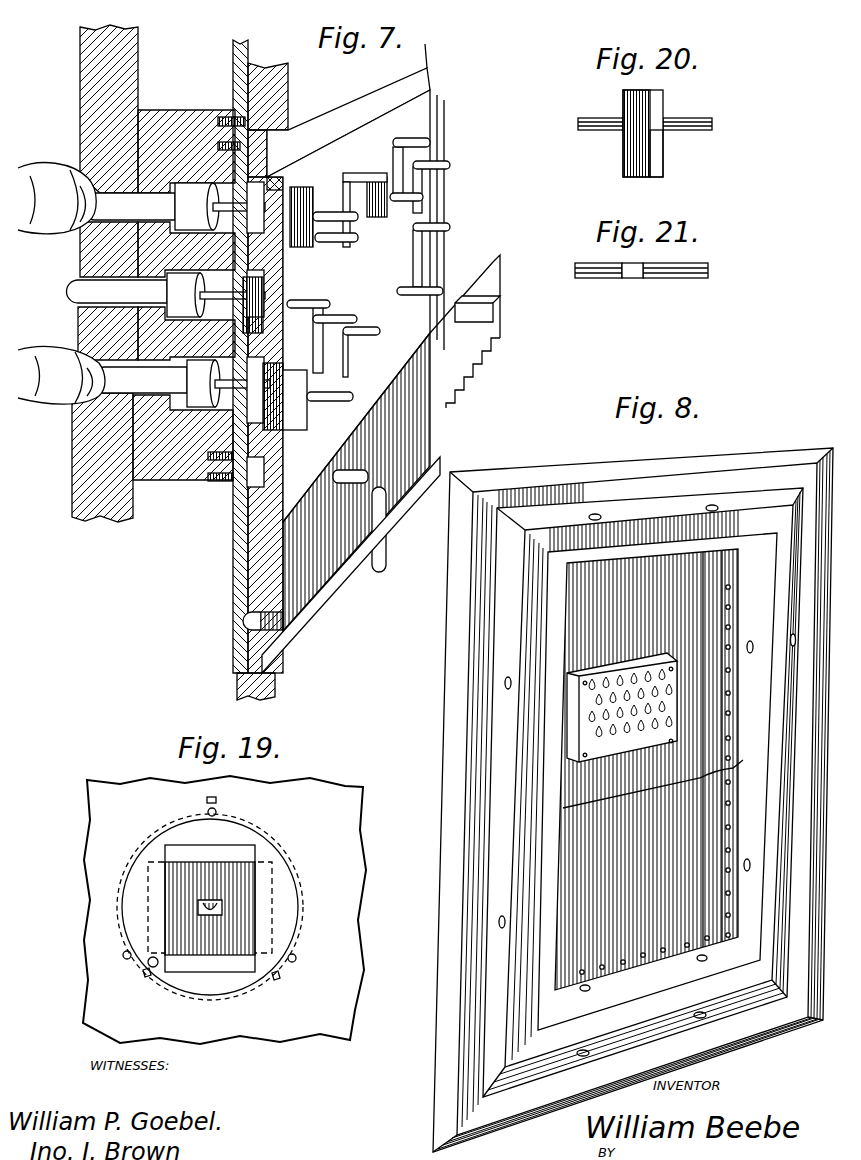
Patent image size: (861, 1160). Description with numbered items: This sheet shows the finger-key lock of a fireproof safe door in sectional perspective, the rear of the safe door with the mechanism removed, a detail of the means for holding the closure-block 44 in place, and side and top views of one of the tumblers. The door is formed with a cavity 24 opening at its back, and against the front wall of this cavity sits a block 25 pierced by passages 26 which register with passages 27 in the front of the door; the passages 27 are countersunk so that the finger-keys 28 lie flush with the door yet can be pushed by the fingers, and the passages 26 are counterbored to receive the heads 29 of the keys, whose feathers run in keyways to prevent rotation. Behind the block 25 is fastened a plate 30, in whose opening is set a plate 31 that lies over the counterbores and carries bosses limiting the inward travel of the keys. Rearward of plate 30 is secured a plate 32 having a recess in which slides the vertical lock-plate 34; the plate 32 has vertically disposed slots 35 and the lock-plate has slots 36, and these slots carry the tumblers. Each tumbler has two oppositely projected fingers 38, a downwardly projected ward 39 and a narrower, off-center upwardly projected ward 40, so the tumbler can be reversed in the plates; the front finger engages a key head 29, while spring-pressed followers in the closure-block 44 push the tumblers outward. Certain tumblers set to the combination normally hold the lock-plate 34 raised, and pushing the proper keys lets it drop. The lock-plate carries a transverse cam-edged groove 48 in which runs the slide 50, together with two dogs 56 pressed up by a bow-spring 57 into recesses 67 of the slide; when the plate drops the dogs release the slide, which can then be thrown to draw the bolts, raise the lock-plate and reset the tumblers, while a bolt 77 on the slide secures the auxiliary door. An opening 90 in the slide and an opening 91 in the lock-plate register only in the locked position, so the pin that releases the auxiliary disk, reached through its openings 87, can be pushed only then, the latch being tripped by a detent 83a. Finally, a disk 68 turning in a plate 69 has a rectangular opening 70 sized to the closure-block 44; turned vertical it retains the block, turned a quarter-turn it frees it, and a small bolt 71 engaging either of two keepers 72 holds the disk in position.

In FIG. 7, the cavity 24 is at (188, 482).
In FIG. 8, the cavity 24 is at (687, 630).
In FIG. 7, the block 25 is at (140, 110).
In FIG. 8, the block 25 is at (630, 712).
In FIG. 7, the passages 26 is at (163, 190).
In FIG. 8, the passages 26 is at (593, 742).
In FIG. 7, the passages 27 is at (70, 225).
In FIG. 7, the finger-keys 28 is at (58, 302).
In FIG. 7, the heads 29 is at (218, 295).
In FIG. 7, the plate 30 is at (243, 42).
In FIG. 8, the plate 30 is at (713, 815).
In FIG. 7, the plate 31 is at (205, 483).
In FIG. 7, the plate 32 is at (276, 94).
In FIG. 7, the lock-plate 34 is at (420, 127).
In FIG. 7, the slots 35 is at (267, 173).
In FIG. 7, the slots 36 is at (318, 345).
In FIG. 7, the fingers 38 is at (432, 143).
In FIG. 20, the fingers 38 is at (594, 125).
In FIG. 21, the fingers 38 is at (598, 278).
In FIG. 7, the ward 39 is at (300, 418).
In FIG. 20, the ward 39 is at (656, 166).
In FIG. 7, the ward 40 is at (313, 190).
In FIG. 20, the ward 40 is at (623, 92).
In FIG. 21, the ward 40 is at (637, 278).
In FIG. 19, the closure-block 44 is at (240, 885).
In FIG. 7, the groove 48 is at (278, 656).
In FIG. 7, the slide 50 is at (473, 373).
In FIG. 7, the dogs 56 is at (387, 518).
In FIG. 7, the bow-spring 57 is at (500, 338).
In FIG. 7, the recesses 67 is at (352, 470).
In FIG. 19, the disk 68 is at (262, 850).
In FIG. 19, the plate 69 is at (224, 910).
In FIG. 19, the rectangular opening 70 is at (218, 852).
In FIG. 19, the bolt 71 is at (156, 967).
In FIG. 19, the keepers 72 is at (146, 976).
In FIG. 7, the bolt 77 is at (490, 298).
In FIG. 19, the detent 83a is at (216, 799).
In FIG. 19, the openings 87 is at (208, 810).
In FIG. 7, the opening 90 is at (284, 622).
In FIG. 7, the opening 91 is at (250, 621).